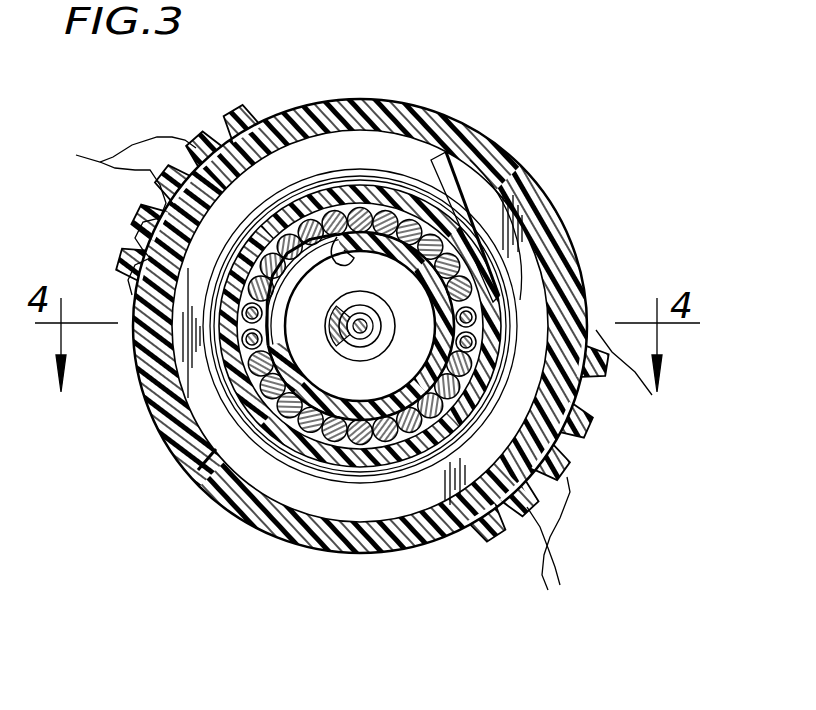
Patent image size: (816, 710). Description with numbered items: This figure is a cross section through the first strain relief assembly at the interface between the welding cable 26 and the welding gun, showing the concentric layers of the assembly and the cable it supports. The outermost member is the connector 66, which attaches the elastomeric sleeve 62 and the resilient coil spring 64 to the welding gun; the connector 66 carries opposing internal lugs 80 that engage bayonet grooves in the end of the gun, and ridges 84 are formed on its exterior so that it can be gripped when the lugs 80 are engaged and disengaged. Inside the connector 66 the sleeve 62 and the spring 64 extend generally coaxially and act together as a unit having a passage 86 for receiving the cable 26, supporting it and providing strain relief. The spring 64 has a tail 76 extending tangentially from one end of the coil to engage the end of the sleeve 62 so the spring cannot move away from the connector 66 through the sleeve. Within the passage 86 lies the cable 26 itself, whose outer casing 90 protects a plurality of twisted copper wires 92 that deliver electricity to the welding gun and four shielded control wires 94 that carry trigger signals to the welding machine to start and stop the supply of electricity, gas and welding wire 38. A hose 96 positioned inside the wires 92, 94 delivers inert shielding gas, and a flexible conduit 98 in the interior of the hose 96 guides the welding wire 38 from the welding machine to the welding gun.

The welding cable 26 is at (316, 492).
The welding wire 38 is at (362, 325).
The elastomeric sleeve 62 is at (203, 463).
The resilient coil spring 64 is at (522, 299).
The connector 66 is at (377, 560).
The tail 76 is at (438, 190).
The internal lugs 80 is at (167, 378).
The ridges 84 is at (342, 368).
The passage 86 is at (270, 437).
The outer casing 90 is at (353, 480).
The twisted copper wires 92 is at (347, 210).
The shielded control wires 94 is at (241, 339).
The hose 96 is at (357, 237).
The flexible conduit 98 is at (383, 353).